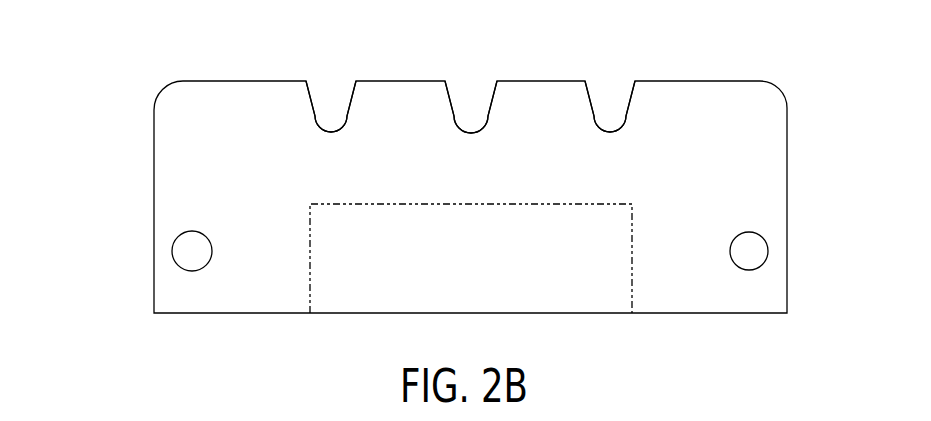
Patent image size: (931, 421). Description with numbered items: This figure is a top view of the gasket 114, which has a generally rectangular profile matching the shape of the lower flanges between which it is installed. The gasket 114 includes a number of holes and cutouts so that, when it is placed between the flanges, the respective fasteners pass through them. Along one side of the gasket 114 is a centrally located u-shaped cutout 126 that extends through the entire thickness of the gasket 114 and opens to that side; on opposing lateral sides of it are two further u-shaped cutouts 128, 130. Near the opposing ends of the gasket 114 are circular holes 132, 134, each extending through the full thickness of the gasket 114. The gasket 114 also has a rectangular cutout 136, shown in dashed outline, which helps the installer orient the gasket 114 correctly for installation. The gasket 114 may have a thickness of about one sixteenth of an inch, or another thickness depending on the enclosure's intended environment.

The gasket 114 is at (93, 156).
The u-shaped cutout 126 is at (473, 58).
The u-shaped cutout 128 is at (321, 58).
The u-shaped cutout 130 is at (616, 58).
The circular hole 132 is at (176, 264).
The circular hole 134 is at (750, 233).
The rectangular cutout 136 is at (560, 284).